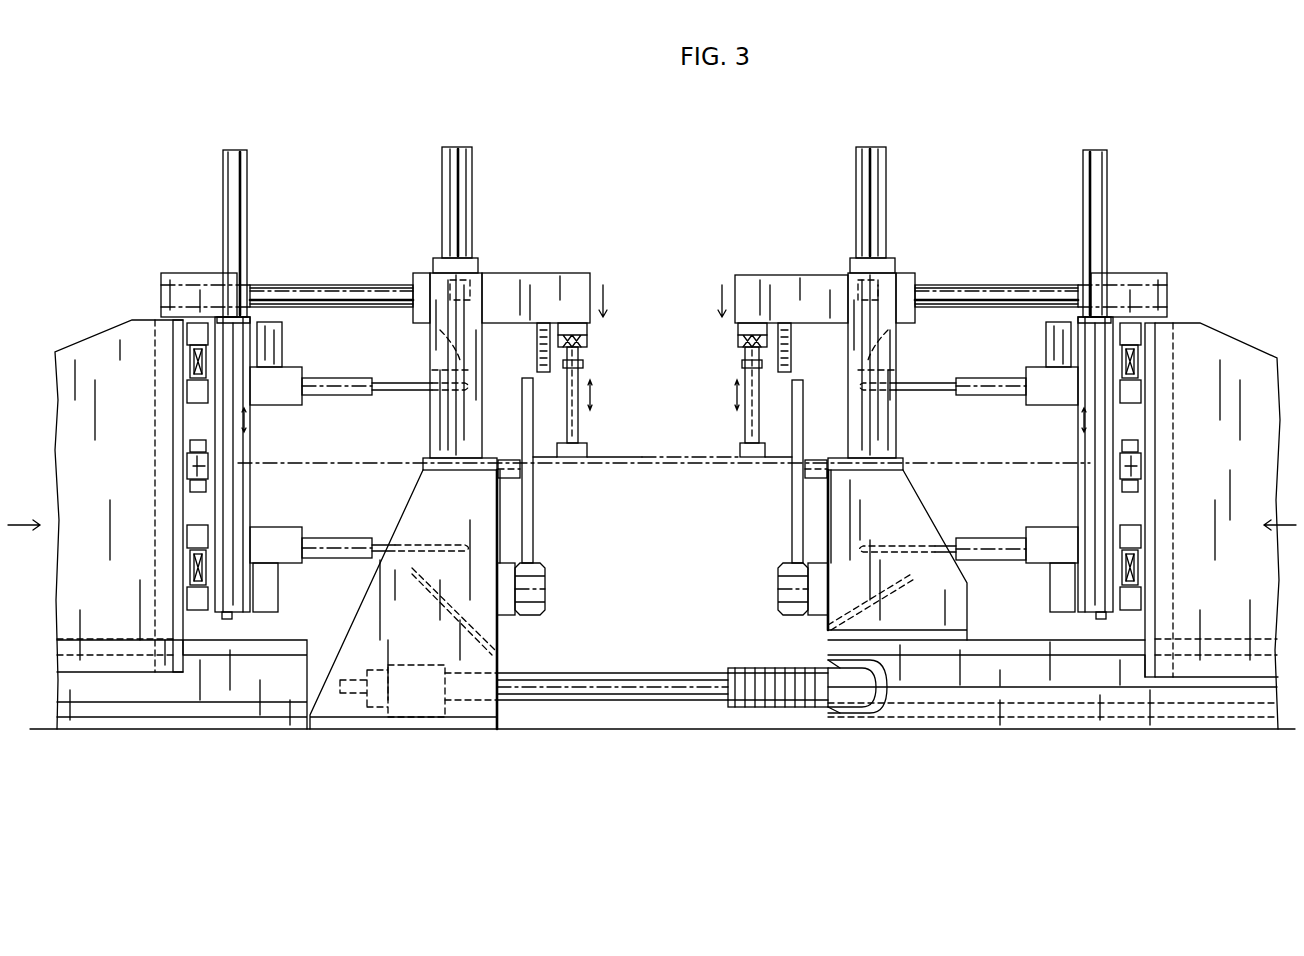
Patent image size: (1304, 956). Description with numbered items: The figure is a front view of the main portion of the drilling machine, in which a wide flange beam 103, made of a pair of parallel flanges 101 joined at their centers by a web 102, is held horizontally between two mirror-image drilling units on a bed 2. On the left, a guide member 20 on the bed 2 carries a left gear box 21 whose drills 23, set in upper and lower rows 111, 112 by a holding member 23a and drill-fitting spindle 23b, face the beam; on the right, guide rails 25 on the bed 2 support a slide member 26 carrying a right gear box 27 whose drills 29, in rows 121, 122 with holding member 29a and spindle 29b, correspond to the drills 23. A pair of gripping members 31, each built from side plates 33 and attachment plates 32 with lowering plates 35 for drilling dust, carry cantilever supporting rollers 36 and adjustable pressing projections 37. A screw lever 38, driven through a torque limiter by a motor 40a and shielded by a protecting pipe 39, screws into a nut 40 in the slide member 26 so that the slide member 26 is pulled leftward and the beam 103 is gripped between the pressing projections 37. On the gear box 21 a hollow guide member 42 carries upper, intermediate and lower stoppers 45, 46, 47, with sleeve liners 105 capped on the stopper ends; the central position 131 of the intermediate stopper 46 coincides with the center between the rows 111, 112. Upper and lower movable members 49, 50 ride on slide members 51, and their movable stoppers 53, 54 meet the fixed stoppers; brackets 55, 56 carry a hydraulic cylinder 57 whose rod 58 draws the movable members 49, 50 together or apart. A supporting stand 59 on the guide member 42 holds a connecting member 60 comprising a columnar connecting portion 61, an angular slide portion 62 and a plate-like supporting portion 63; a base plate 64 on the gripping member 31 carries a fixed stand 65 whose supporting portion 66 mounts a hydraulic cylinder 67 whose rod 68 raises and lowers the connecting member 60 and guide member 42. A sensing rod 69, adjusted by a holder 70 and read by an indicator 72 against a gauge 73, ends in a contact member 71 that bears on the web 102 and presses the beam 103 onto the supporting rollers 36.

The bed 2 is at (652, 728).
The guide member 20 is at (170, 722).
The left gear box 21 is at (108, 348).
The drills 23 is at (412, 390).
The holding member 23a is at (254, 405).
The drill-fitting spindle 23b is at (330, 395).
The guide rails 25 is at (1115, 720).
The slide member 26 is at (1006, 700).
The right gear box 27 is at (1215, 348).
The drills 29 is at (906, 390).
The holding member 29a is at (1072, 405).
The drill-fitting spindle 29b is at (980, 395).
The gripping members 31 is at (498, 652).
The attachment plates 32 is at (500, 512).
The side plates 33 is at (498, 630).
The lowering plates 35 is at (428, 590).
The supporting rollers 36 is at (540, 563).
The pressing projection 37 is at (510, 460).
The screw lever 38 is at (632, 673).
The protecting pipe 39 is at (758, 668).
The nut 40 is at (840, 713).
The motor 40a is at (418, 665).
The guide member 42 is at (183, 415).
The upper stopper 45 is at (190, 332).
The intermediate stopper 46 is at (190, 465).
The lower stopper 47 is at (190, 598).
The upper movable member 49 is at (262, 340).
The lower movable member 50 is at (243, 590).
The slide members 51 is at (243, 388).
The upper movable stopper 53 is at (190, 392).
The lower movable stopper 54 is at (190, 536).
The bracket 55 is at (245, 317).
The bracket 56 is at (220, 616).
The hydraulic cylinder 57 is at (247, 185).
The rod 58 is at (235, 453).
The supporting stand 59 is at (190, 273).
The connecting member 60 is at (352, 285).
The columnar connecting portion 61 is at (312, 285).
The angular slide portion 62 is at (440, 280).
The plate-like supporting portion 63 is at (557, 283).
The base plate 64 is at (468, 470).
The fixed stand 65 is at (432, 370).
The supporting portion 66 is at (435, 336).
The hydraulic cylinder 67 is at (472, 185).
The rod 68 is at (470, 285).
The sensing rod 69 is at (567, 413).
The holder 70 is at (587, 338).
The contact member 71 is at (582, 450).
The indicator 72 is at (583, 364).
The gauge 73 is at (537, 338).
The flanges 101 is at (520, 410).
The web 102 is at (642, 457).
The wide flange beam 103 is at (675, 457).
The sleeve liners 105 is at (192, 362).
The upper row 111 is at (453, 410).
The lower row 112 is at (445, 545).
The upper row 121 is at (868, 410).
The lower row 122 is at (858, 550).
The central position 131 is at (205, 464).